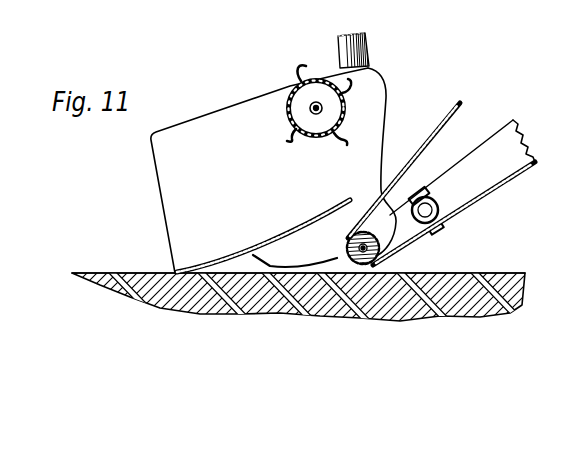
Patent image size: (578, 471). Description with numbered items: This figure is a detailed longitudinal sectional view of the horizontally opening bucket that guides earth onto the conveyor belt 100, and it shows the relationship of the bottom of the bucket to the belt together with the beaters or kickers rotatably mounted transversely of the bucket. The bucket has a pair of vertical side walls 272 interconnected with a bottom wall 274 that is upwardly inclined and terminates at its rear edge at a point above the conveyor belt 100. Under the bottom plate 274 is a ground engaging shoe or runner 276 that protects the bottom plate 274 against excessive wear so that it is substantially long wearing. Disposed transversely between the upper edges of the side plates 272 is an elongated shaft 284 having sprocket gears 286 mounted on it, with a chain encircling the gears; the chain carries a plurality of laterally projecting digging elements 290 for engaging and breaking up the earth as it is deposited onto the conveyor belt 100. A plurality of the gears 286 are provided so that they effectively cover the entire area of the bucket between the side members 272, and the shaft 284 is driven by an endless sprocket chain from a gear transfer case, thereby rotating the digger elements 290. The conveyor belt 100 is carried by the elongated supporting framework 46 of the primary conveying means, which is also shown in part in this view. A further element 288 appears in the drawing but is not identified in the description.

The vertical side walls 272 is at (196, 134).
The bottom wall 274 is at (283, 235).
The ground engaging shoe 276 is at (300, 268).
The elongated shaft 284 is at (316, 103).
The sprocket gears 286 is at (291, 116).
The hook tooth 288 is at (349, 118).
The digging elements 290 is at (300, 67).
The conveyor belt 100 is at (428, 142).
The elongated supporting framework 46 is at (493, 145).